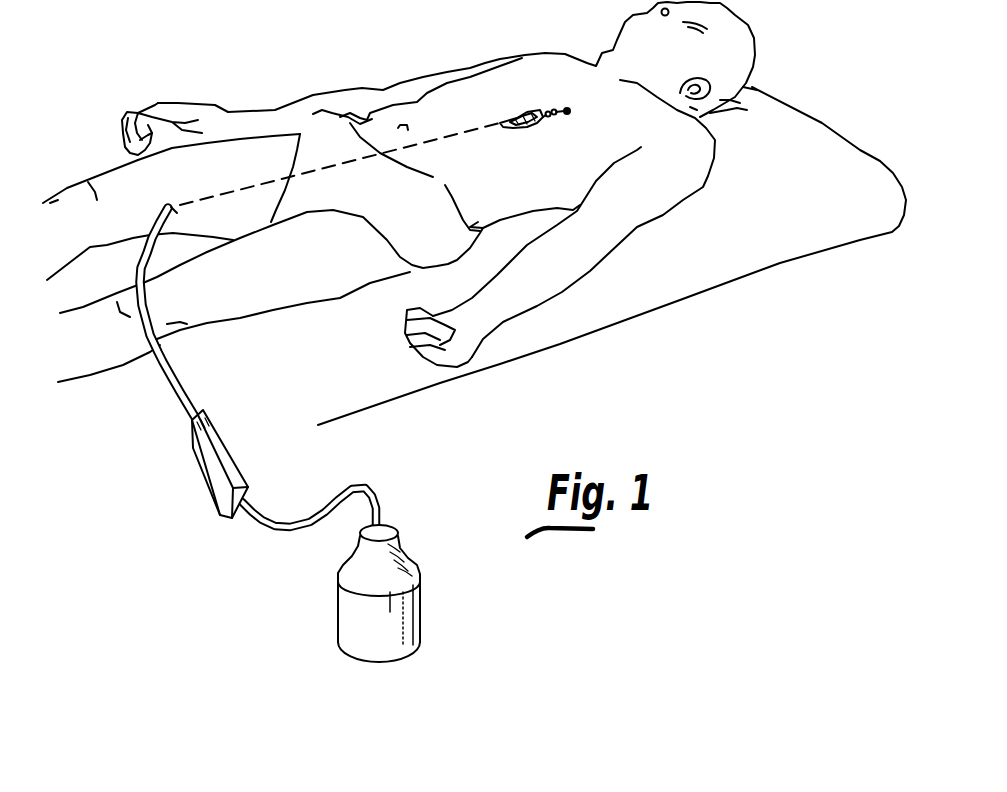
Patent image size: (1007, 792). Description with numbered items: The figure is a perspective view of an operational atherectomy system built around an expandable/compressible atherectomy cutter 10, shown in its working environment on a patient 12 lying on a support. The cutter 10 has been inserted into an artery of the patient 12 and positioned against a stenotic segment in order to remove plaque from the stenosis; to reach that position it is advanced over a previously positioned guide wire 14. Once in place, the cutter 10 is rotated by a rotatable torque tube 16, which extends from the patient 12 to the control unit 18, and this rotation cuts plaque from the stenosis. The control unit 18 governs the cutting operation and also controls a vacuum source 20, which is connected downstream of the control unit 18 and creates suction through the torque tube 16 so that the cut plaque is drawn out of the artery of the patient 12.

The expandable/compressible atherectomy cutter 10 is at (520, 72).
The patient 12 is at (728, 43).
The guide wire 14 is at (564, 110).
The rotatable torque tube 16 is at (176, 399).
The control unit 18 is at (222, 487).
The vacuum source 20 is at (411, 603).